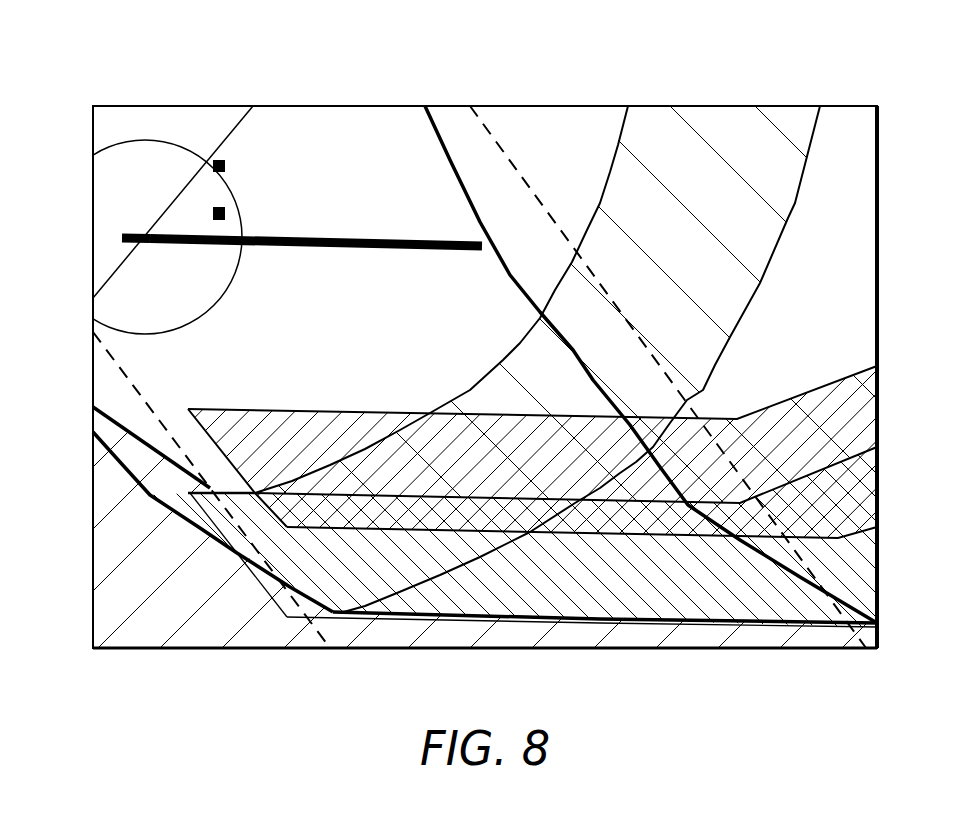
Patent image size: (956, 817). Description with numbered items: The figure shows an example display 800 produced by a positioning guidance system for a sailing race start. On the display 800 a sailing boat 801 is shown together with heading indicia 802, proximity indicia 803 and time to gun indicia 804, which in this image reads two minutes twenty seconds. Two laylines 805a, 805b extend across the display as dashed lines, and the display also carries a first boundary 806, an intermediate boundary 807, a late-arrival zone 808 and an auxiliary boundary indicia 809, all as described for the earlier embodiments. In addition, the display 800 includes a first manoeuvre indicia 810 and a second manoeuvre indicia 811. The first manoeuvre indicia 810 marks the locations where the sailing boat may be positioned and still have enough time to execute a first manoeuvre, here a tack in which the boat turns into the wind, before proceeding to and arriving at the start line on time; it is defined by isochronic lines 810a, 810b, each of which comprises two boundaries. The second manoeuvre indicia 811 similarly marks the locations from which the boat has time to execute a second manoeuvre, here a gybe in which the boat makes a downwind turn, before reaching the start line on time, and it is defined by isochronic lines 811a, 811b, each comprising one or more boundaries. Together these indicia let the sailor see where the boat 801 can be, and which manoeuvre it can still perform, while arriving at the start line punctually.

The display 800 is at (745, 74).
The sailing boat 801 is at (122, 238).
The heading indicia 802 is at (327, 249).
The proximity indicia 803 is at (223, 300).
The time to gun indicia 804 is at (122, 190).
The layline 805a is at (137, 384).
The layline 805b is at (513, 166).
The first boundary 806 is at (122, 473).
The intermediate boundary 807 is at (553, 620).
The late-arrival zone 808 is at (120, 584).
The auxiliary boundary indicia 809 is at (122, 444).
The first manoeuvre indicia 810 is at (687, 594).
The isochronic line 810a is at (287, 618).
The isochronic line 810b is at (190, 493).
The second manoeuvre indicia 811 is at (365, 424).
The isochronic line 811a is at (370, 528).
The isochronic line 811b is at (277, 409).